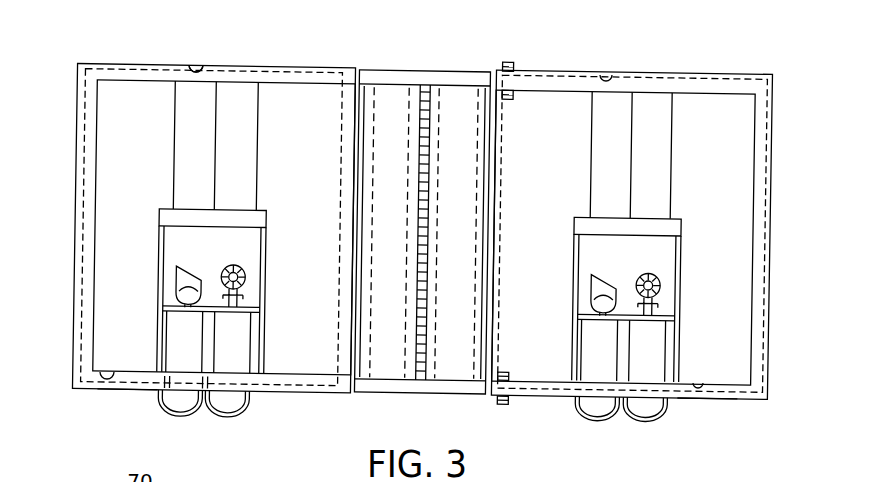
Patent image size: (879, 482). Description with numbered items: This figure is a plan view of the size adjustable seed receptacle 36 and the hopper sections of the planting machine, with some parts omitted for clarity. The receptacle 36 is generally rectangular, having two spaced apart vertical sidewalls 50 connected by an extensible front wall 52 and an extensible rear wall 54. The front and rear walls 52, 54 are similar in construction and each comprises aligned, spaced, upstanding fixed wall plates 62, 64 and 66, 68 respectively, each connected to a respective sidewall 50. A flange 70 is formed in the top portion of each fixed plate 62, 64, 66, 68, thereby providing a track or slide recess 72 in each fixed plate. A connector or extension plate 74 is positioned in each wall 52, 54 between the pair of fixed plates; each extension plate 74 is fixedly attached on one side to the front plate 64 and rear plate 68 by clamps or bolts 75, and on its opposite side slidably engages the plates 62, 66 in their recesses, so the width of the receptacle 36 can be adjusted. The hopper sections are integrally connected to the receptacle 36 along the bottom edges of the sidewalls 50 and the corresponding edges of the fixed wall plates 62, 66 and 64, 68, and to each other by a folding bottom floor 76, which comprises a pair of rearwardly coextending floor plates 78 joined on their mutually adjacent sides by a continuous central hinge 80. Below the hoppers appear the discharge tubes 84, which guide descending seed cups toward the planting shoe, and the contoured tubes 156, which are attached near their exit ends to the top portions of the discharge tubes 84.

The size adjustable seed receptacle 36 is at (720, 212).
The vertical sidewalls 50 is at (76, 284).
The extensible front wall 52 is at (282, 396).
The extensible rear wall 54 is at (298, 64).
The front fixed wall plate 62 is at (120, 386).
The front fixed wall plate 64 is at (693, 402).
The rear fixed wall plate 66 is at (196, 63).
The rear fixed wall plate 68 is at (607, 75).
The flange 70 is at (124, 80).
The track or slide recess 72 is at (240, 77).
The connector or extension plate 74 is at (390, 76).
The clamps or bolts 75 is at (511, 101).
The folding bottom floor 76 is at (461, 112).
The floor plates 78 is at (385, 252).
The central hinge 80 is at (422, 218).
The discharge tube 84 is at (225, 413).
The contoured tube 156 is at (230, 337).